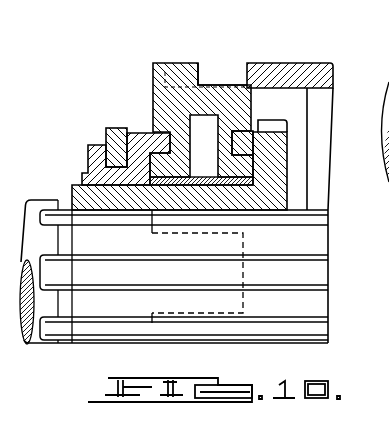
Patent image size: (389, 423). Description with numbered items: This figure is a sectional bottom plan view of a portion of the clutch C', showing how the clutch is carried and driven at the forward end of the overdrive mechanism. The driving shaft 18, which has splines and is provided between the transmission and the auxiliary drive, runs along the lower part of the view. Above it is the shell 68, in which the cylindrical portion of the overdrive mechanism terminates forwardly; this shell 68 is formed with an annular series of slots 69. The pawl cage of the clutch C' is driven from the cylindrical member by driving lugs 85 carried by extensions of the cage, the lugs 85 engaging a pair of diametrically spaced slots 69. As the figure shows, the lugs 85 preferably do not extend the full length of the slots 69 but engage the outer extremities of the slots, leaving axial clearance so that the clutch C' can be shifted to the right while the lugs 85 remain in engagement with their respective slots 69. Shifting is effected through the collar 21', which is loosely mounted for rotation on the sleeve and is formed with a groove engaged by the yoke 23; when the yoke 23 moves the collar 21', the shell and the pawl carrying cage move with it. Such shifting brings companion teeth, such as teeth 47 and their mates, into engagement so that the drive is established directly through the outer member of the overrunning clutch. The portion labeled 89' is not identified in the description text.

The driving shaft 18 is at (310, 243).
The driving lugs 85 is at (157, 63).
The slots 69 is at (218, 70).
The shell 68 is at (288, 67).
The teeth 47 is at (282, 106).
The insert piece 89' is at (207, 137).
The collar 21' is at (214, 137).
The yoke 23 is at (113, 128).
The clutch C' is at (121, 78).